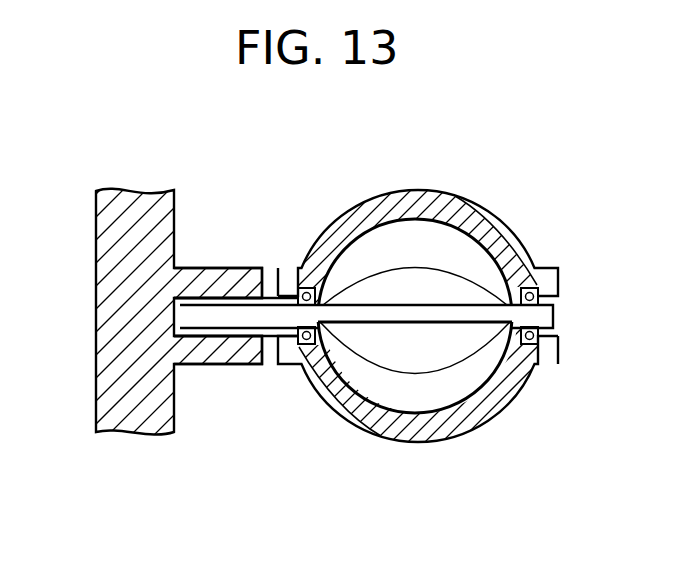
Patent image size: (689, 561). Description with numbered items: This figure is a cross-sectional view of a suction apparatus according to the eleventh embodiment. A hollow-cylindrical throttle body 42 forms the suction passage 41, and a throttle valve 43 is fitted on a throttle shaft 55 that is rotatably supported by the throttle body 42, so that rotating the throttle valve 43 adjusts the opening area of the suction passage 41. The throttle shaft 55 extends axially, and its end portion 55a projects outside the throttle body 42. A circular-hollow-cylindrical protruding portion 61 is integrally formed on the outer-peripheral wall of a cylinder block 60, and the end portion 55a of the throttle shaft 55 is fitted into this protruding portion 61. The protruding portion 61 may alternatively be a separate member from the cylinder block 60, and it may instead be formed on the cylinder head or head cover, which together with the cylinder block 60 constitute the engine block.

The suction passage 41 is at (414, 228).
The throttle body 42 is at (503, 230).
The throttle valve 43 is at (507, 405).
The throttle shaft 55 is at (377, 312).
The end portion 55a is at (200, 317).
The cylinder block 60 is at (103, 400).
The protruding portion 61 is at (223, 357).